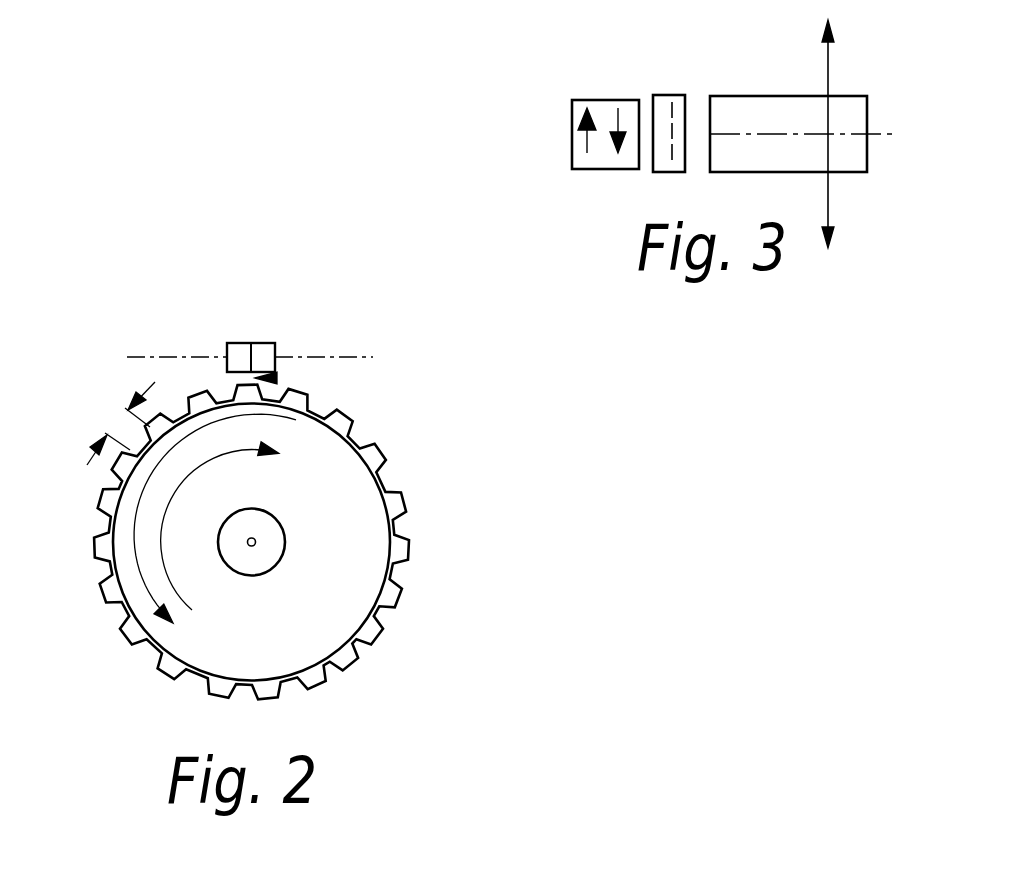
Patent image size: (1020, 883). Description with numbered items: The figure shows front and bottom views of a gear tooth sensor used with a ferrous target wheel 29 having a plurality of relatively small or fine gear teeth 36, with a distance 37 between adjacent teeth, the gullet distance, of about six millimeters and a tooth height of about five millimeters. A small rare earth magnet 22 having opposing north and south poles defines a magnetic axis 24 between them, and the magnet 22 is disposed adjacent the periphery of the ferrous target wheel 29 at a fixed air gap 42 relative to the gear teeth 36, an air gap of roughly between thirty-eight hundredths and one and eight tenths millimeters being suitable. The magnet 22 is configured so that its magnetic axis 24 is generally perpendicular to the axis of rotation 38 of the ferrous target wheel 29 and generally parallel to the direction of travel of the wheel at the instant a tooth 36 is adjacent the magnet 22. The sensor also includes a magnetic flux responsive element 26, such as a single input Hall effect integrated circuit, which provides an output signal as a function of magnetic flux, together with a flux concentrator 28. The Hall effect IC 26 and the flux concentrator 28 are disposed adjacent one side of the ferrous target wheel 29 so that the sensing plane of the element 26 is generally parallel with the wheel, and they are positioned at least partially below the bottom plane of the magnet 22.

In FIG. 3, the magnet 22 is at (757, 96).
In FIG. 2, the magnet 22 is at (257, 343).
In FIG. 3, the magnetic axis 24 is at (885, 133).
In FIG. 2, the magnetic axis 24 is at (177, 357).
In FIG. 3, the magnetic flux responsive element 26 is at (665, 95).
In FIG. 3, the flux concentrator 28 is at (572, 120).
In FIG. 2, the ferrous target wheel 29 is at (303, 643).
In FIG. 2, the gear teeth 36 is at (363, 648).
In FIG. 2, the distance between adjacent teeth 37 is at (121, 423).
In FIG. 2, the axis of rotation 38 is at (257, 546).
In FIG. 2, the air gap 42 is at (277, 378).